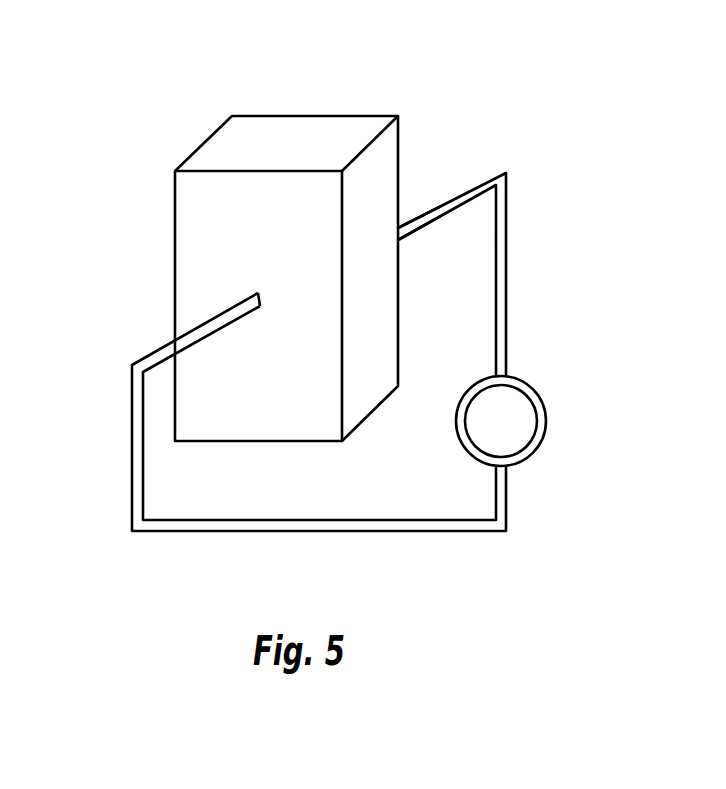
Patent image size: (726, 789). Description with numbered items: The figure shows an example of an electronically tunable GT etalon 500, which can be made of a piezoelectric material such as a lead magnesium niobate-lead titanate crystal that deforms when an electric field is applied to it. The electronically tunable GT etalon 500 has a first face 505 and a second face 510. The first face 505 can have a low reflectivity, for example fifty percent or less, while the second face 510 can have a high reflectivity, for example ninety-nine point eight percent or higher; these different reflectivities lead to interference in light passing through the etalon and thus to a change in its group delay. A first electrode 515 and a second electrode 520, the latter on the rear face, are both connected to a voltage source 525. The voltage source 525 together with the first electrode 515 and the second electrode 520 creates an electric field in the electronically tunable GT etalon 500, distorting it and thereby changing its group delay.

The electronically tunable GT etalon 500 is at (135, 70).
The first face 505 is at (225, 252).
The second face 510 is at (418, 173).
The first electrode 515 is at (257, 320).
The second electrode 520 is at (402, 243).
The voltage source 525 is at (530, 465).